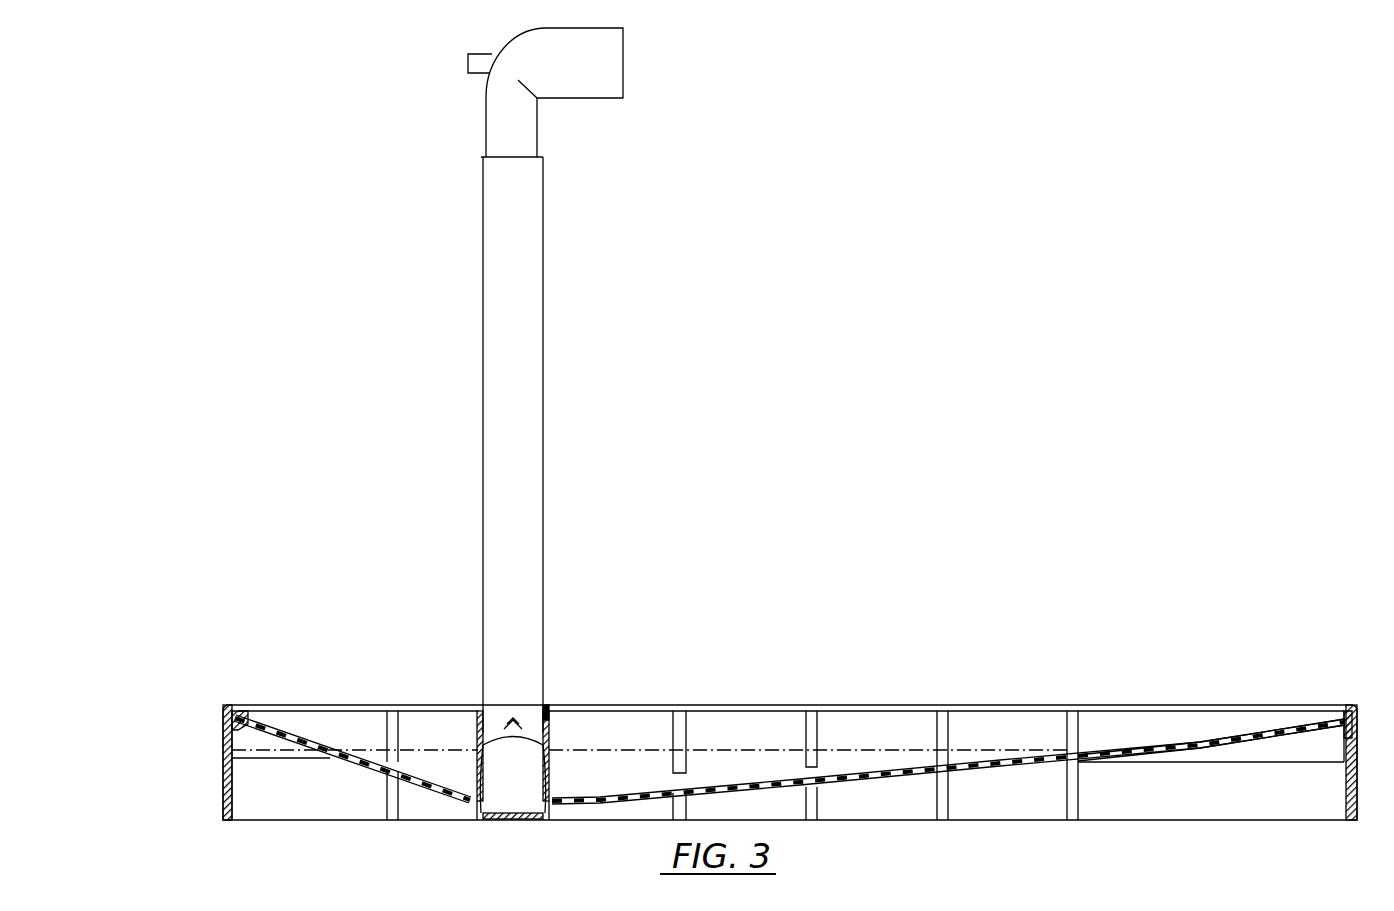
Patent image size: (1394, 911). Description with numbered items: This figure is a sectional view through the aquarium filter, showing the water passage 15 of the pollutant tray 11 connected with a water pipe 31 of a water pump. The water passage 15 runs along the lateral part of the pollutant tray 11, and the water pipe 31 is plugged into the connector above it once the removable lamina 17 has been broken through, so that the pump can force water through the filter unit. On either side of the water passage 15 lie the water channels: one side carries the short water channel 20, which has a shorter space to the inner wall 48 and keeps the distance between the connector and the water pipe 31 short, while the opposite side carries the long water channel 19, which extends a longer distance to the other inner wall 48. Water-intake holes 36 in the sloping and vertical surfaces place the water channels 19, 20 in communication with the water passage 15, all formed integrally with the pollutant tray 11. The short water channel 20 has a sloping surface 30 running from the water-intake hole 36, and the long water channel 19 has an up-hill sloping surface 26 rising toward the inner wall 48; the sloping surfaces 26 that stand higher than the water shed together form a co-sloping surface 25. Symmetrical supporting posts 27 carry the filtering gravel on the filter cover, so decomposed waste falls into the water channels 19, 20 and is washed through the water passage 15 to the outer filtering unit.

The pollutant tray 11 is at (220, 780).
The water passage 15 is at (518, 788).
The removable lamina 17 is at (546, 718).
The long water channel 19 is at (730, 765).
The short water channel 20 is at (355, 745).
The co-sloping surface 25 is at (1200, 745).
The sloping surface 26 is at (880, 770).
The supporting post 27 is at (1081, 720).
The sloping surface 30 is at (430, 755).
The water pipe 31 is at (533, 410).
The water-intake hole 36 is at (472, 780).
The inner wall 48 is at (245, 708).